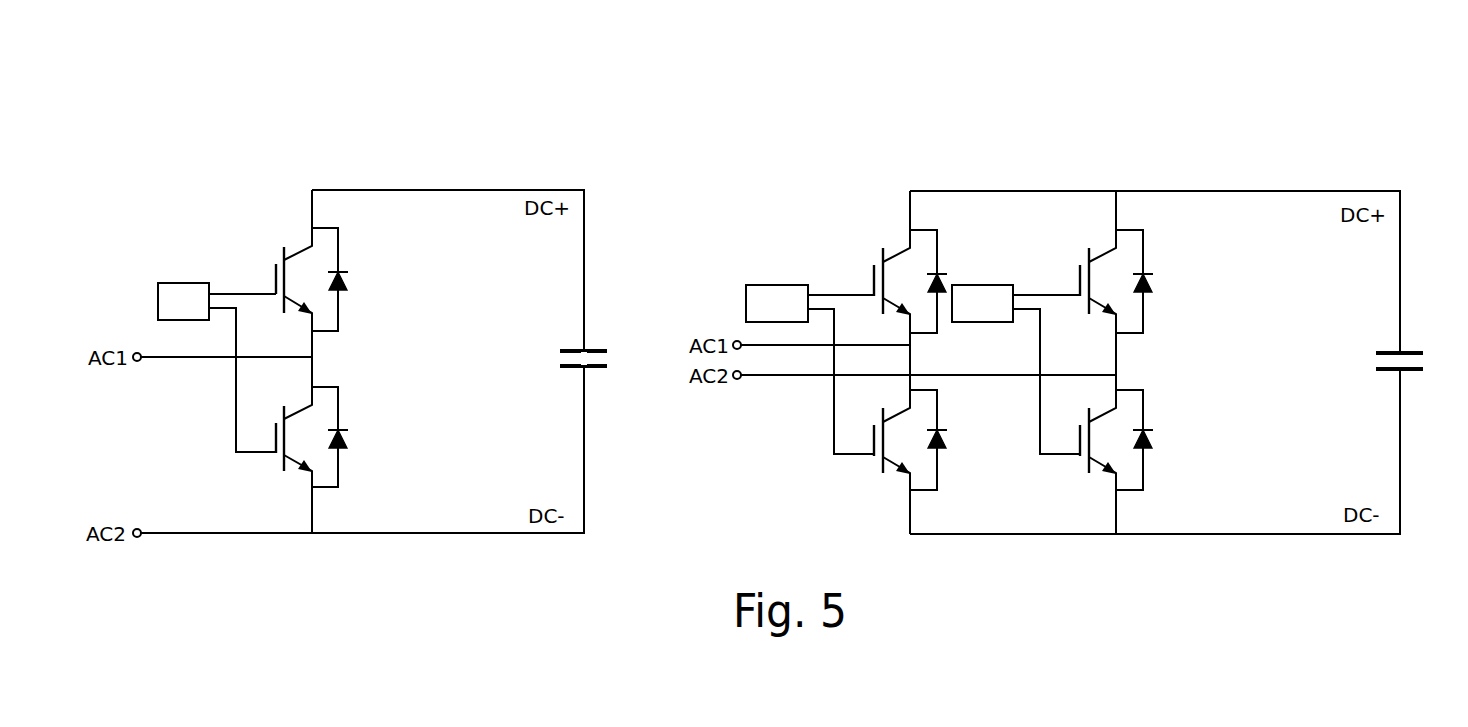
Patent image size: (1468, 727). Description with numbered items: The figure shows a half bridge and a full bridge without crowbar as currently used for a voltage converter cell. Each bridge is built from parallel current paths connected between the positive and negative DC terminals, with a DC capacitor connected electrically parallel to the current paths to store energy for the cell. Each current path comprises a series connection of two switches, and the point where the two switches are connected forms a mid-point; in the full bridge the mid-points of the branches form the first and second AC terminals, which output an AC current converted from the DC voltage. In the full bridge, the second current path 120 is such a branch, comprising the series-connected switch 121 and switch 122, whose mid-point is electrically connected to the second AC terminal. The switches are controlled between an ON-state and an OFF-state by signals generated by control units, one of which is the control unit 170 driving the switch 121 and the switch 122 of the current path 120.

The current path 120 is at (1116, 192).
The switch 121 is at (1132, 281).
The switch 122 is at (1133, 440).
The control unit 170 is at (1016, 352).